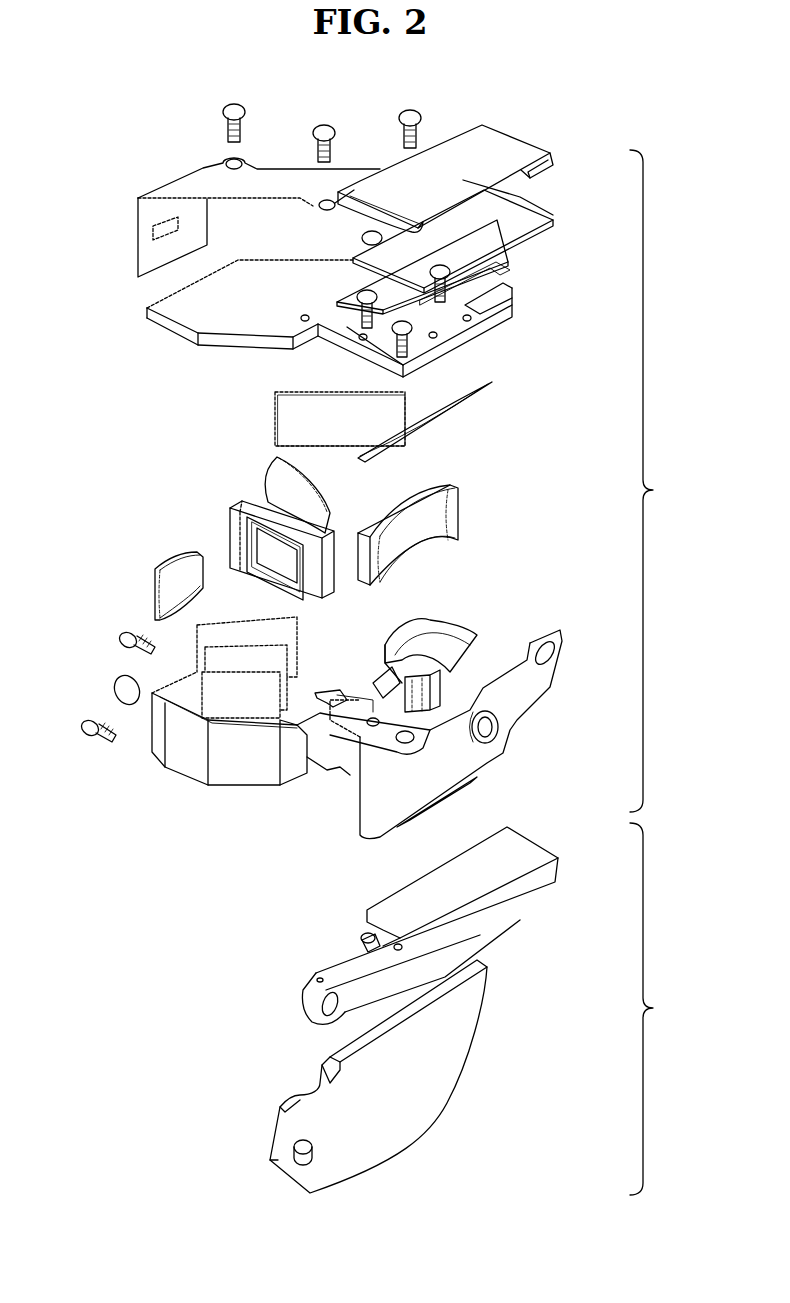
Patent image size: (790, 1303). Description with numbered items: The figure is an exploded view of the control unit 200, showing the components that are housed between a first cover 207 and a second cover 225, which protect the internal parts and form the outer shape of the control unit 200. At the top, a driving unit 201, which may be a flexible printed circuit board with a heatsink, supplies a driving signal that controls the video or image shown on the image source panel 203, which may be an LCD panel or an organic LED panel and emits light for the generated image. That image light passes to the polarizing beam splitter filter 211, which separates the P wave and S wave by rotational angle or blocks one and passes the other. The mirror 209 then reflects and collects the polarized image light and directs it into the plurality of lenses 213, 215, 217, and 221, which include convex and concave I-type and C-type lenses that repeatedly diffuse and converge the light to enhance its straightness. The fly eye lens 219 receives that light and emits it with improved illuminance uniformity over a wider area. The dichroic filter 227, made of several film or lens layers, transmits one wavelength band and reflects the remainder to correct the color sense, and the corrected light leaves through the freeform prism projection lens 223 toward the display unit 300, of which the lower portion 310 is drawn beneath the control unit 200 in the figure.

The control unit 200 is at (661, 481).
The driving unit 201 is at (556, 158).
The image source panel 203 is at (490, 258).
The first cover 207 is at (148, 318).
The mirror 209 is at (280, 418).
The polarizing beam splitter filter (PBSF) 211 is at (470, 400).
The lens 213 is at (276, 483).
The lens 215 is at (154, 588).
The lens 217 is at (458, 513).
The fly eye lens (FEL) 219 is at (236, 532).
The lens 221 is at (114, 690).
The freeform prism projection lens (FPL) 223 is at (452, 628).
The second cover 225 is at (547, 673).
The dichroic filter 227 is at (240, 707).
The display unit 300 is at (470, 1031).
The cover bar 310 is at (560, 868).